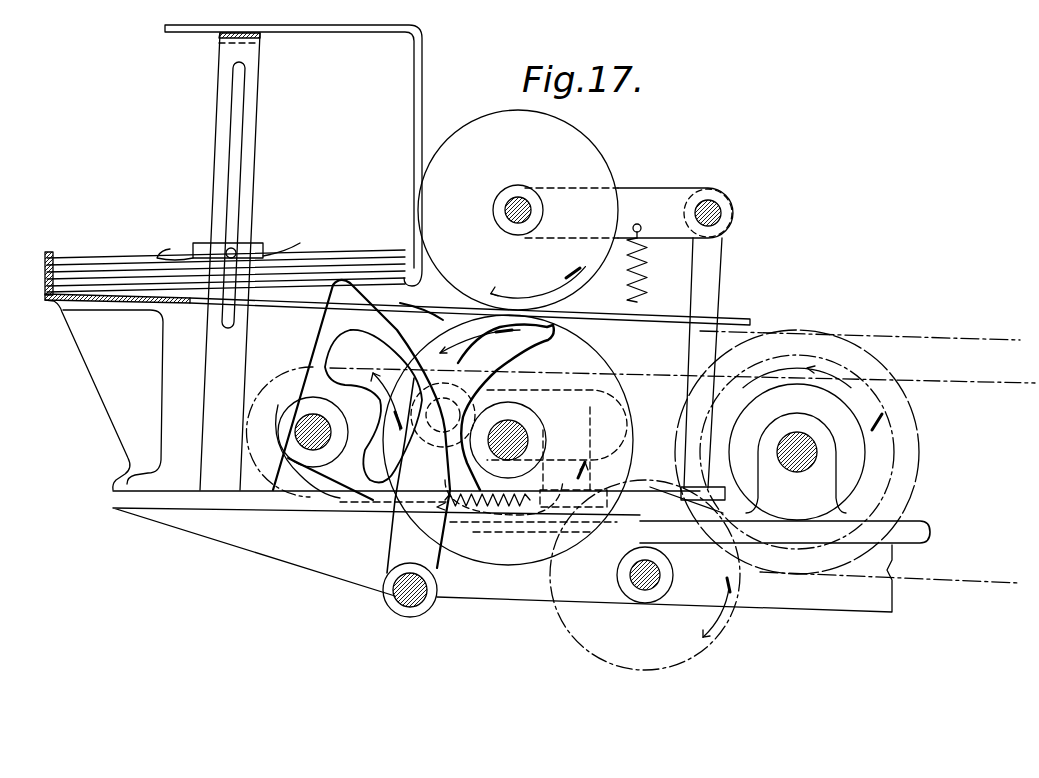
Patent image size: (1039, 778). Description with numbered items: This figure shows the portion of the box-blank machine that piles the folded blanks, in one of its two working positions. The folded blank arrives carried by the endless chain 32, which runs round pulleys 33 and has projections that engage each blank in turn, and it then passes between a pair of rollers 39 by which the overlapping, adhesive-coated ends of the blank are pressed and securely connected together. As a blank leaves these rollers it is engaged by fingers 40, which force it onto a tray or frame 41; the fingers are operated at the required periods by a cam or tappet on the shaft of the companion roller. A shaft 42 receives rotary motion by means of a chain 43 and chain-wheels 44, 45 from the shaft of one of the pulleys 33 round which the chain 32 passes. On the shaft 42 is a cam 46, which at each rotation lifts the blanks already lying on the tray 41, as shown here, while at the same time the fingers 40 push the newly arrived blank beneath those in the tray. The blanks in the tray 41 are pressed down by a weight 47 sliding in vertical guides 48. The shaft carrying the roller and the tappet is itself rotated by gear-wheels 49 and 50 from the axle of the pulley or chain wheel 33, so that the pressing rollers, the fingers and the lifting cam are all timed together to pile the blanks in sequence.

The endless chain 32 is at (889, 337).
The pulleys 33 is at (913, 497).
The pair of rollers 39 is at (518, 210).
The fingers 40 is at (508, 434).
The tray or frame 41 is at (268, 305).
The shaft 42 is at (312, 430).
The chain 43 is at (632, 388).
The chain-wheel 44 is at (867, 458).
The chain-wheel 45 is at (268, 390).
The cam 46 is at (371, 325).
The weight 47 is at (203, 250).
The vertical guides 48 is at (218, 159).
The gear-wheel 49 is at (514, 540).
The gear-wheel 50 is at (570, 630).